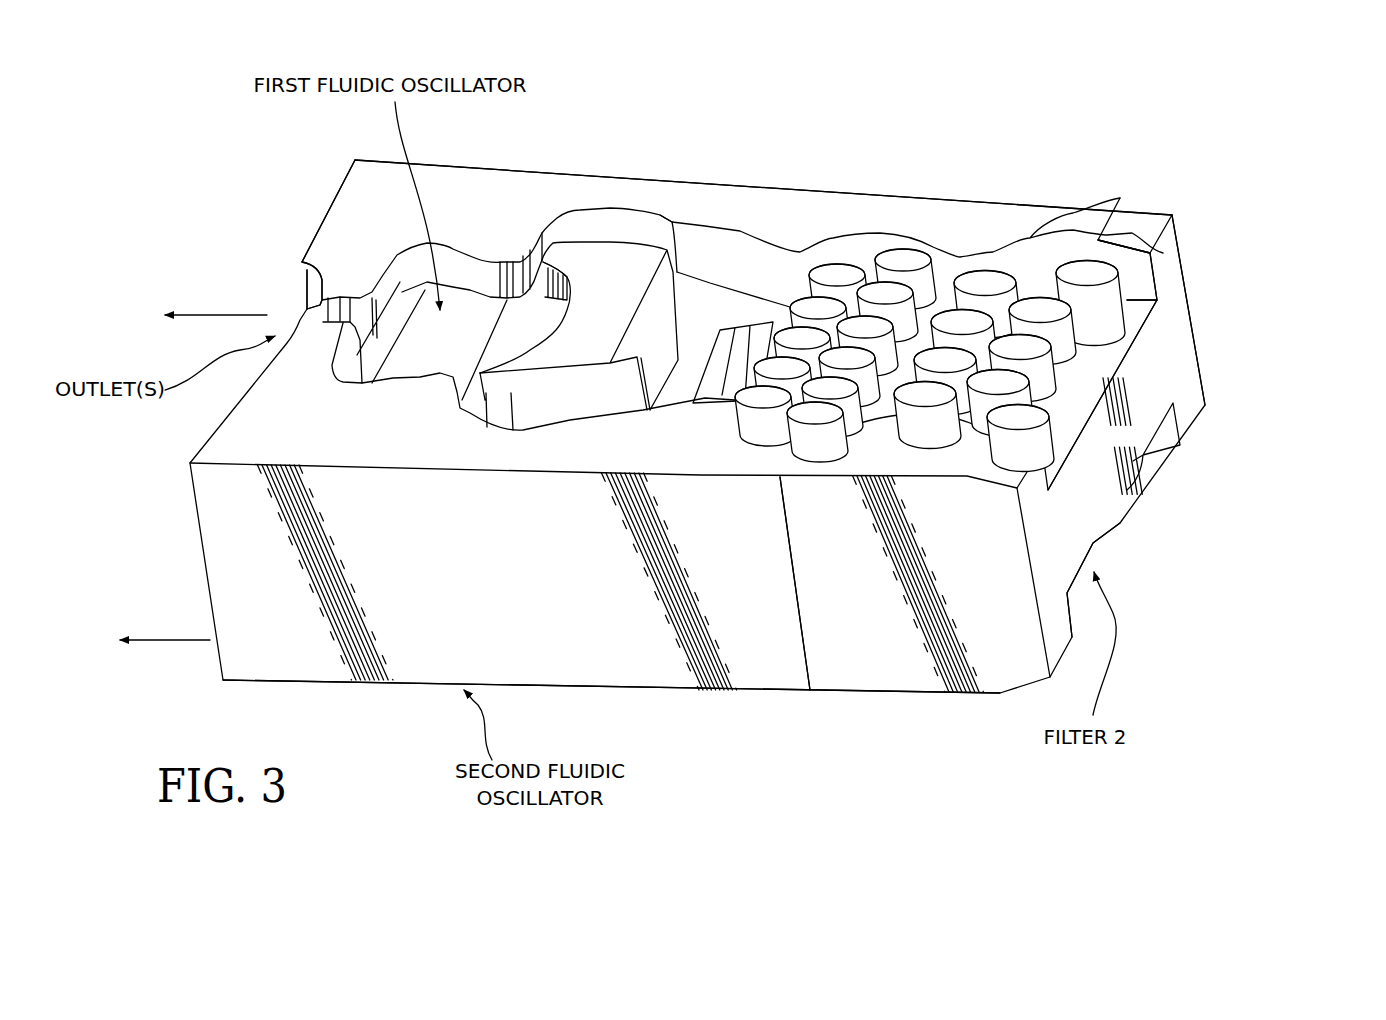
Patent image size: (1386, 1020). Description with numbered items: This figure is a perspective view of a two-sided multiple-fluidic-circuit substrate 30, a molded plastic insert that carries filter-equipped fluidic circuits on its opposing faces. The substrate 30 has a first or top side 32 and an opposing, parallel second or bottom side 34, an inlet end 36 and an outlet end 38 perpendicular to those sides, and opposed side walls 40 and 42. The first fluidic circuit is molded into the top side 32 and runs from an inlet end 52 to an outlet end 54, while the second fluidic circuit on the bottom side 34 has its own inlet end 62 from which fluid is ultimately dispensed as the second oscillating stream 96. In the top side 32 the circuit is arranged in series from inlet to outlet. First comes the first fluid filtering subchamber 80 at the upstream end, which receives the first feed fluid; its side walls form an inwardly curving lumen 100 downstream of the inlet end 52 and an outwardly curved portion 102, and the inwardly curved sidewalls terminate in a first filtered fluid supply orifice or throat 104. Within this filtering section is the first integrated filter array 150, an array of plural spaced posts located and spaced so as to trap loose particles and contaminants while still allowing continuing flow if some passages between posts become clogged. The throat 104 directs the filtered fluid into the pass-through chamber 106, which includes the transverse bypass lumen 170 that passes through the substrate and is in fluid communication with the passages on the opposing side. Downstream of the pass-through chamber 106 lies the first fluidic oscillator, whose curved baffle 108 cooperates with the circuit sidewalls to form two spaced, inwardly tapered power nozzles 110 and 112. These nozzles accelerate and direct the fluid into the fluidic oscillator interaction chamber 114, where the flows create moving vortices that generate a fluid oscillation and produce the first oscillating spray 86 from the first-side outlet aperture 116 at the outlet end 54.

The two-sided multiple-fluidic-circuit substrate 30 is at (862, 166).
The first or top side 32 is at (915, 195).
The second or bottom side 34 is at (773, 695).
The inlet end 36 is at (1178, 337).
The outlet end 38 is at (322, 222).
The side wall 40 is at (992, 195).
The side wall 42 is at (884, 676).
The inlet end of first fluidic circuit 52 is at (1163, 283).
The outlet end of first fluidic circuit 54 is at (290, 293).
The inlet end of second fluidic circuit 62 is at (1102, 547).
The first fluid filtering subchamber 80 is at (1020, 262).
The first oscillating spray or fluid stream 86 is at (190, 310).
The second oscillating spray or fluid stream 96 is at (160, 652).
The inwardly curving lumen 100 is at (960, 420).
The outwardly curved portion 102 is at (838, 435).
The first filtered fluid supply orifice or throat 104 is at (808, 262).
The pass-through chamber 106 is at (703, 252).
The curved baffle 108 is at (570, 367).
The power nozzle 110 is at (585, 232).
The power nozzle 112 is at (470, 410).
The fluidic oscillator interaction chamber 114 is at (418, 353).
The first-side outlet aperture 116 is at (340, 307).
The first integrated filter array 150 is at (962, 262).
The bypass lumen 170 is at (717, 390).